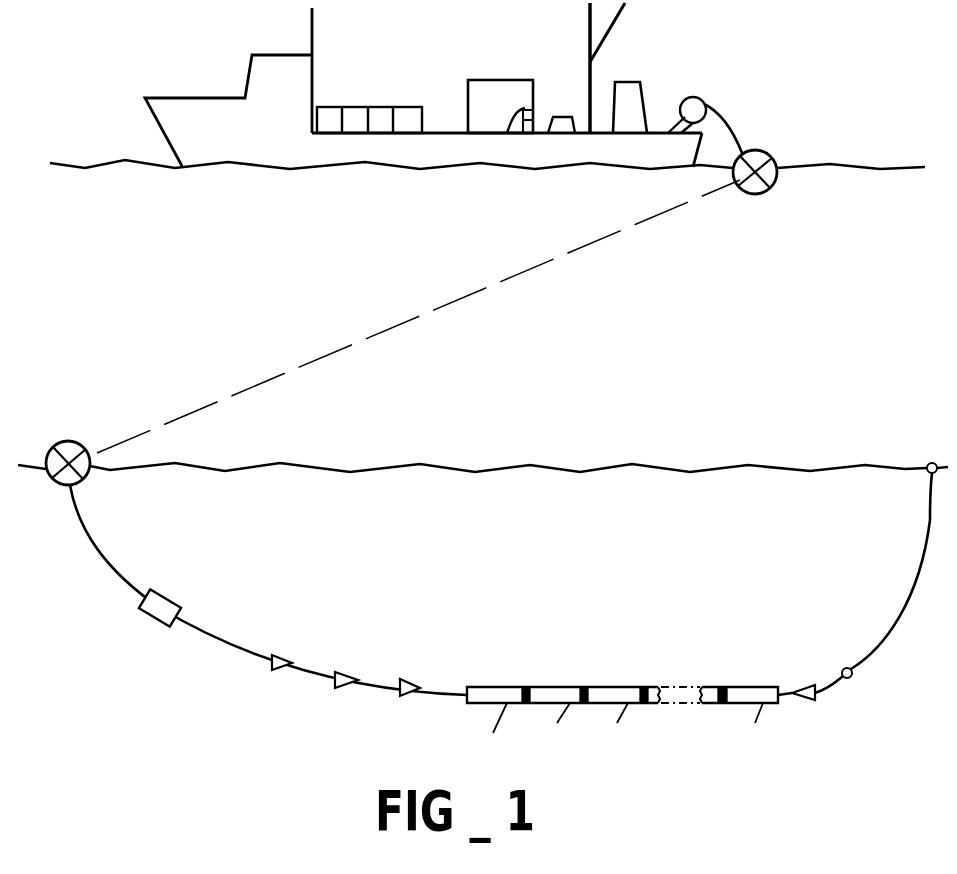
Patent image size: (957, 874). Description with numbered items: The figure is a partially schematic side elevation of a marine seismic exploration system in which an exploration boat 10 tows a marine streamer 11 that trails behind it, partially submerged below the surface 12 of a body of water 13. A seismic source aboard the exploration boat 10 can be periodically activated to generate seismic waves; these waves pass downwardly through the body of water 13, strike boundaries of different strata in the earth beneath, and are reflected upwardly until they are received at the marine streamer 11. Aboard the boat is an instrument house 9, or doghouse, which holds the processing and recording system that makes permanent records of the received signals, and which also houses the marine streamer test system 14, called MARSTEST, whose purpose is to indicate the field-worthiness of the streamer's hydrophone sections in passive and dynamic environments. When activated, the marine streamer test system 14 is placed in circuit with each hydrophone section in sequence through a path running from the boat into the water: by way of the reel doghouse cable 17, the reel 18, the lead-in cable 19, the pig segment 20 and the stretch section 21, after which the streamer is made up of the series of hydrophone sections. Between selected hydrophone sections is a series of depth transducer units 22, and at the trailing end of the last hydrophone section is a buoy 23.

The instrument house 9 is at (481, 80).
The exploration boat 10 is at (270, 66).
The marine streamer 11 is at (230, 625).
The surface 12 is at (820, 165).
The body of water 13 is at (735, 548).
The marine streamer test system 14 is at (535, 113).
The reel doghouse cable 17 is at (672, 113).
The reel 18 is at (700, 97).
The lead-in cable 19 is at (730, 128).
The pig segment 20 is at (148, 618).
The stretch section 21 is at (365, 685).
The depth transducer units 22 is at (722, 703).
The buoy 23 is at (928, 462).